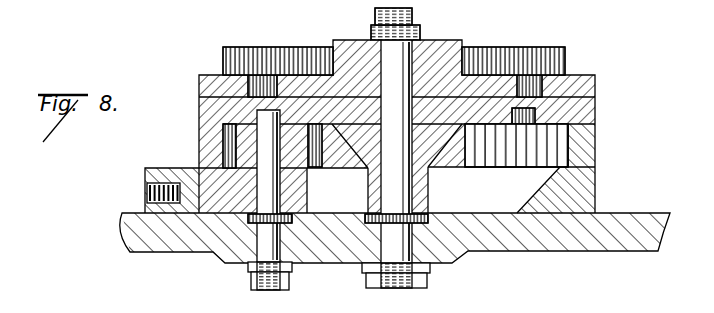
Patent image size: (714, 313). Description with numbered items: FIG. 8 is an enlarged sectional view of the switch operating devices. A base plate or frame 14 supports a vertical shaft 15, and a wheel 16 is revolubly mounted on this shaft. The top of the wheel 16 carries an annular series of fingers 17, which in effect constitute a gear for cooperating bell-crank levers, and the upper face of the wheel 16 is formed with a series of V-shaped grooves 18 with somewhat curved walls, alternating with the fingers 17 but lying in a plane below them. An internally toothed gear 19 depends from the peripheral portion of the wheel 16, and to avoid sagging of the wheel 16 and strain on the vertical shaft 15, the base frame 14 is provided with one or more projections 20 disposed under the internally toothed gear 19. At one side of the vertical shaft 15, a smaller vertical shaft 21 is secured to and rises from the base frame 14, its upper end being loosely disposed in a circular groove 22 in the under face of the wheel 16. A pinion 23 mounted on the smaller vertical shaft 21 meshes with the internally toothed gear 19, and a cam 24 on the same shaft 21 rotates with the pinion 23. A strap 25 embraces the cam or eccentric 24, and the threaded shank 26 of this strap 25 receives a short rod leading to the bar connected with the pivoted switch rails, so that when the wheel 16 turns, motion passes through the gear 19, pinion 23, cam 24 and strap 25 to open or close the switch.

The base plate or frame 14 is at (334, 251).
The vertical shaft 15 is at (393, 50).
The wheel 16 is at (357, 113).
The fingers 17 is at (241, 47).
The V-shaped grooves 18 is at (262, 80).
The internally toothed gear 19 is at (570, 150).
The projections 20 is at (580, 187).
The smaller vertical shaft 21 is at (265, 238).
The circular groove 22 is at (527, 124).
The pinion 23 is at (224, 131).
The cam 24 is at (313, 204).
The strap 25 is at (320, 196).
The shank 26 is at (164, 170).